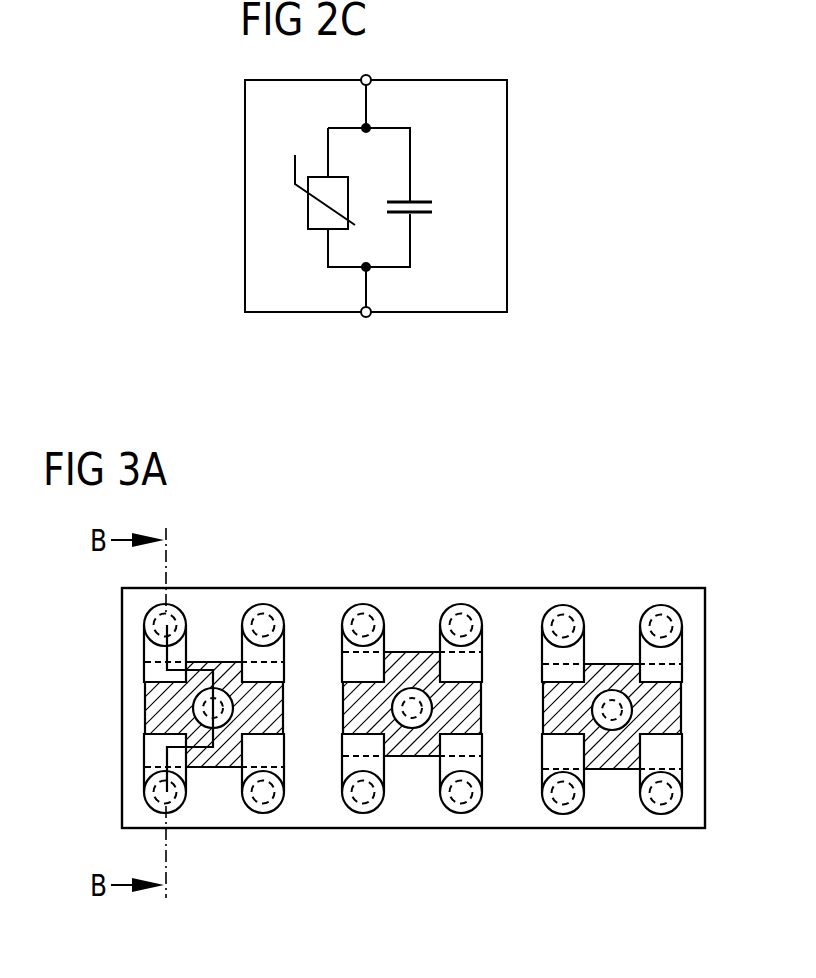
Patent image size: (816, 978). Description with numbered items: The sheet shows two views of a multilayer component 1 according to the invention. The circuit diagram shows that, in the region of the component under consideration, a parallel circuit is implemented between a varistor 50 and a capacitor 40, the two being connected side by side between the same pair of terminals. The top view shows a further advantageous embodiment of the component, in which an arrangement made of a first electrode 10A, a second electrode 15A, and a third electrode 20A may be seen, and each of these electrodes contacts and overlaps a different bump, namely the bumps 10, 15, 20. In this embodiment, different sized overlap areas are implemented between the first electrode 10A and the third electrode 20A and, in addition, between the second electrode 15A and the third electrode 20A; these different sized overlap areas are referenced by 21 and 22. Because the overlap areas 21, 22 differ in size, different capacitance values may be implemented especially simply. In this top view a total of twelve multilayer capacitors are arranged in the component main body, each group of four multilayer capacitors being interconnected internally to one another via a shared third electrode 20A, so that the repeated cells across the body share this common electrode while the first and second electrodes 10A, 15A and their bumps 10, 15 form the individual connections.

In FIG. 3A, the sensor module substrate 1 is at (484, 575).
In FIG. 3A, the bump 10 is at (147, 618).
In FIG. 3A, the first electrode 10A is at (146, 652).
In FIG. 3A, the bump 15 is at (146, 794).
In FIG. 3A, the second electrode 15A is at (146, 774).
In FIG. 3A, the bump 20 is at (228, 691).
In FIG. 3A, the third electrode 20A is at (146, 706).
In FIG. 3A, the overlap area 21 is at (147, 672).
In FIG. 3A, the overlap area 22 is at (147, 745).
In FIG. 2C, the capacitor 40 is at (433, 208).
In FIG. 2C, the varistor 50 is at (309, 202).